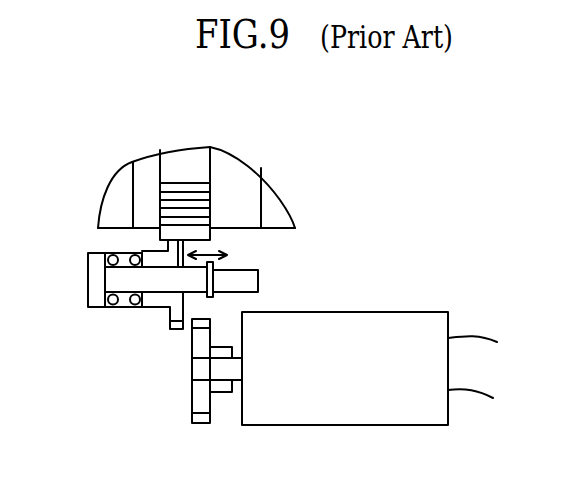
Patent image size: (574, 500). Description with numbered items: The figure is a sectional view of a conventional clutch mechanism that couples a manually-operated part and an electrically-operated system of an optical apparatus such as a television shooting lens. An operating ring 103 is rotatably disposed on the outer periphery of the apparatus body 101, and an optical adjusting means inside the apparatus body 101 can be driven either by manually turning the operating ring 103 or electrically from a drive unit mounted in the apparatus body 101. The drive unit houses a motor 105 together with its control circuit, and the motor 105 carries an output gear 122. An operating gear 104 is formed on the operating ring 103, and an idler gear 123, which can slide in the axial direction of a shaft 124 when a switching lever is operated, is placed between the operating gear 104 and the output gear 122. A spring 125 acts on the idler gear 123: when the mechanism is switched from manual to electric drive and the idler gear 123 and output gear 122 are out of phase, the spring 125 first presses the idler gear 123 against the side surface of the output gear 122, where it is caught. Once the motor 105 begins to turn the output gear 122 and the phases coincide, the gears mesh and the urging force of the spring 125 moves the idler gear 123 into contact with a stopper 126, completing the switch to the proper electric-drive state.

The apparatus body 101 is at (287, 200).
The operating ring 103 is at (235, 178).
The operating gear 104 is at (182, 162).
The motor 105 is at (328, 405).
The output gear 122 is at (192, 398).
The idler gear 123 is at (165, 310).
The shaft 124 is at (93, 278).
The spring 125 is at (110, 257).
The stopper 126 is at (220, 278).